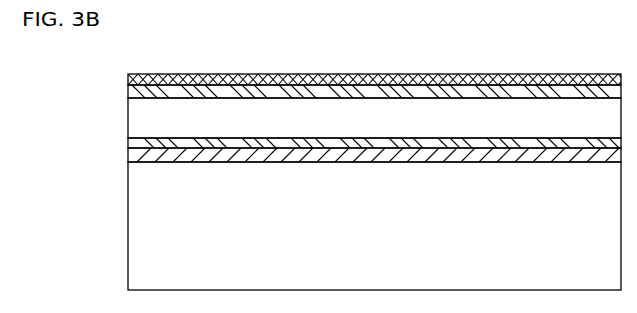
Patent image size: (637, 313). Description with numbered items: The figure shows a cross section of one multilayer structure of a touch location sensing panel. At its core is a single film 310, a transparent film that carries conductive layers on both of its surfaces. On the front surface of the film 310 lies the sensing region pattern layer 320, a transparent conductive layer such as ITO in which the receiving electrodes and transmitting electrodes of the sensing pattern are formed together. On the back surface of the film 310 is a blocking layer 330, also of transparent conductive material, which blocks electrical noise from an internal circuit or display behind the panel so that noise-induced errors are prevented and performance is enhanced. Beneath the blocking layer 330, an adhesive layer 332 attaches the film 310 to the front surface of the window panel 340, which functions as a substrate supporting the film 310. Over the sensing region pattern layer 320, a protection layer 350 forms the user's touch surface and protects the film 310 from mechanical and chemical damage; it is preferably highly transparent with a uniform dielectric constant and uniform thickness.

The protection layer 350 is at (128, 79).
The sensing region pattern layer 320 is at (128, 94).
The film 310 is at (128, 118).
The blocking layer 330 is at (128, 143).
The adhesive layer 332 is at (128, 157).
The window panel 340 is at (128, 230).